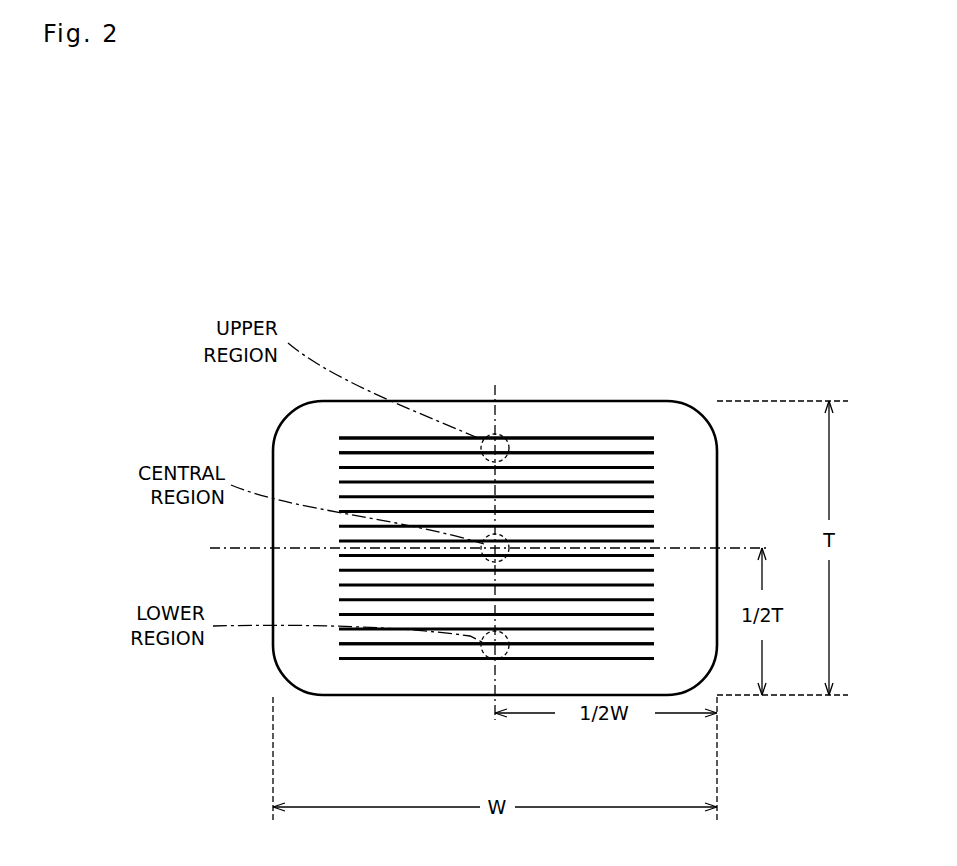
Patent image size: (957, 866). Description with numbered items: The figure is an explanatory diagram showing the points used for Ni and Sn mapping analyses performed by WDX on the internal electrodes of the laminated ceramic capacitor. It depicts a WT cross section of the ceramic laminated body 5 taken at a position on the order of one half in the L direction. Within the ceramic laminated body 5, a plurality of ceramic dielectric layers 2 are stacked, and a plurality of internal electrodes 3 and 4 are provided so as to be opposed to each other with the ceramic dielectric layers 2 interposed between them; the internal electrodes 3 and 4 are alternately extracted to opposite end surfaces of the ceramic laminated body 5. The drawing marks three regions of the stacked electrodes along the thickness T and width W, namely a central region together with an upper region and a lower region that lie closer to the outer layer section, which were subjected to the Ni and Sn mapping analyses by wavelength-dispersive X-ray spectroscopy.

The ceramic laminated body 5 is at (413, 333).
The ceramic dielectric layers 2 is at (628, 503).
The internal electrode 3 is at (533, 452).
The internal electrode 4 is at (563, 466).